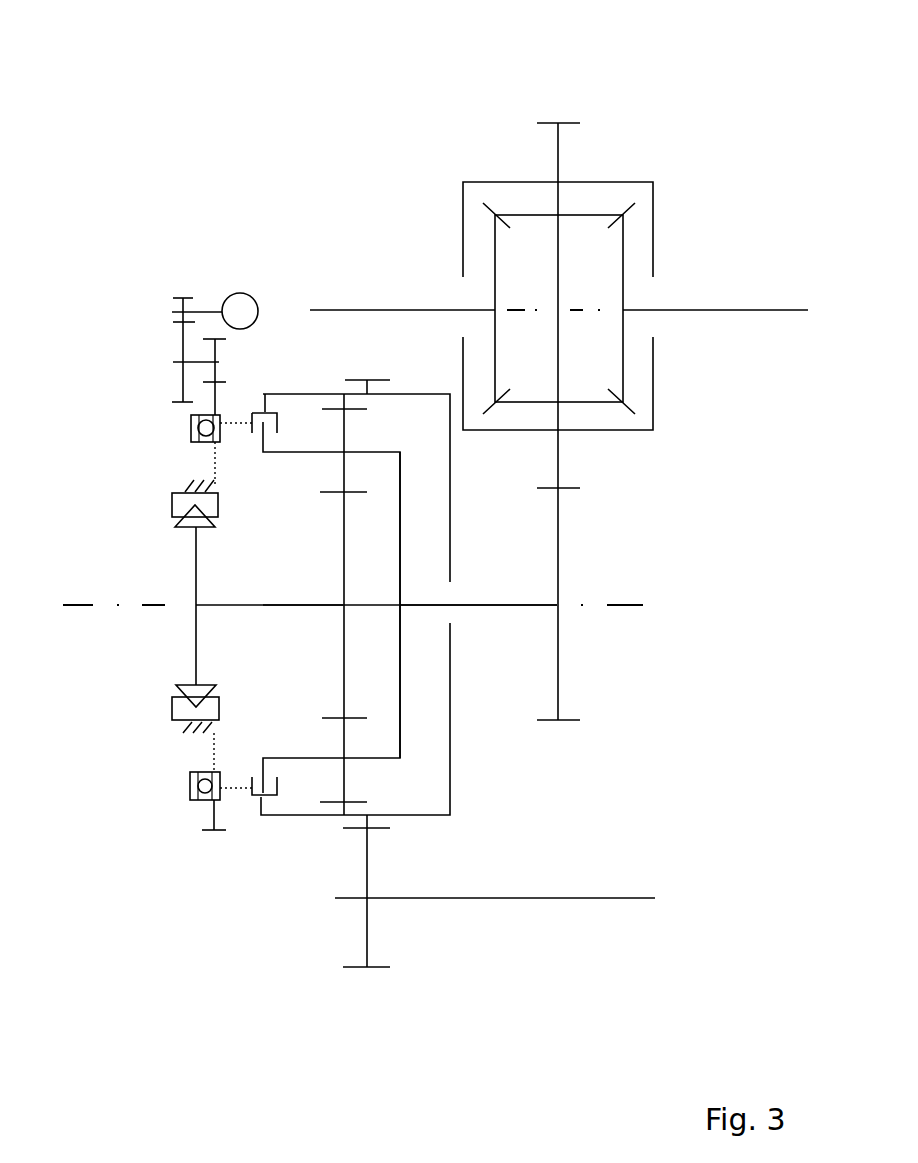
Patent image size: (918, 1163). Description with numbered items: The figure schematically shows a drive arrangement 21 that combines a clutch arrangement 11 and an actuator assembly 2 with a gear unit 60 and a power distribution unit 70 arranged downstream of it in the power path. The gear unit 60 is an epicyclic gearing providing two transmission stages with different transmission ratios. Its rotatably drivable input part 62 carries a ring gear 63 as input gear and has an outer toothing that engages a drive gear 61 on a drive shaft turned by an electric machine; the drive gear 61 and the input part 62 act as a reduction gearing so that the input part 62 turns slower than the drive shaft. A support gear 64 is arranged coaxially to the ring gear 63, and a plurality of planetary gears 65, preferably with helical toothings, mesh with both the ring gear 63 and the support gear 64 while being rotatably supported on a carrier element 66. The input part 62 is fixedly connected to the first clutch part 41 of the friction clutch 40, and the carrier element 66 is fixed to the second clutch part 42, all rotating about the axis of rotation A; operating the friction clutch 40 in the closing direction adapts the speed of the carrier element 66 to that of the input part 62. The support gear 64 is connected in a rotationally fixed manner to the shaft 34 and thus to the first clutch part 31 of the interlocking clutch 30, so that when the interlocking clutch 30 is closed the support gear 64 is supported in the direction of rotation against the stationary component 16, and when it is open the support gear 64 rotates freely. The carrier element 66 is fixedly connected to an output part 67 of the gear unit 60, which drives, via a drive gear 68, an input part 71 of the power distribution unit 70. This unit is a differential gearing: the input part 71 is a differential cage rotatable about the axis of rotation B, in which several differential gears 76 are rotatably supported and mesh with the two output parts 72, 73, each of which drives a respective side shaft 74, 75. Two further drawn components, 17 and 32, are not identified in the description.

The actuator assembly 2 is at (210, 268).
The clutch arrangement 11 is at (240, 872).
The stationary component 16 is at (188, 483).
The parking lock 17 is at (168, 464).
The drive arrangement 21 is at (368, 86).
The interlocking clutch 30 is at (162, 691).
The first clutch part 31 is at (202, 520).
The shifting element 32 is at (172, 508).
The shaft 34 is at (275, 606).
The friction clutch 40 is at (240, 766).
The first clutch part 41 is at (255, 797).
The second clutch part 42 is at (265, 758).
The gear unit 60 is at (506, 816).
The drive gear 61 is at (378, 968).
The input part 62 is at (428, 815).
The ring gear 63 is at (358, 800).
The support gear 64 is at (343, 545).
The planetary gears 65 is at (345, 737).
The carrier element 66 is at (400, 680).
The output part 67 is at (473, 603).
The drive gear 68 is at (568, 720).
The power distribution unit 70 is at (680, 465).
The input part 71 is at (603, 432).
The output part 72 is at (625, 260).
The output part 73 is at (490, 268).
The side shaft 74 is at (745, 308).
The side shaft 75 is at (355, 308).
The differential gears 76 is at (597, 212).
The axis of rotation A is at (77, 605).
The axis of rotation B is at (570, 308).